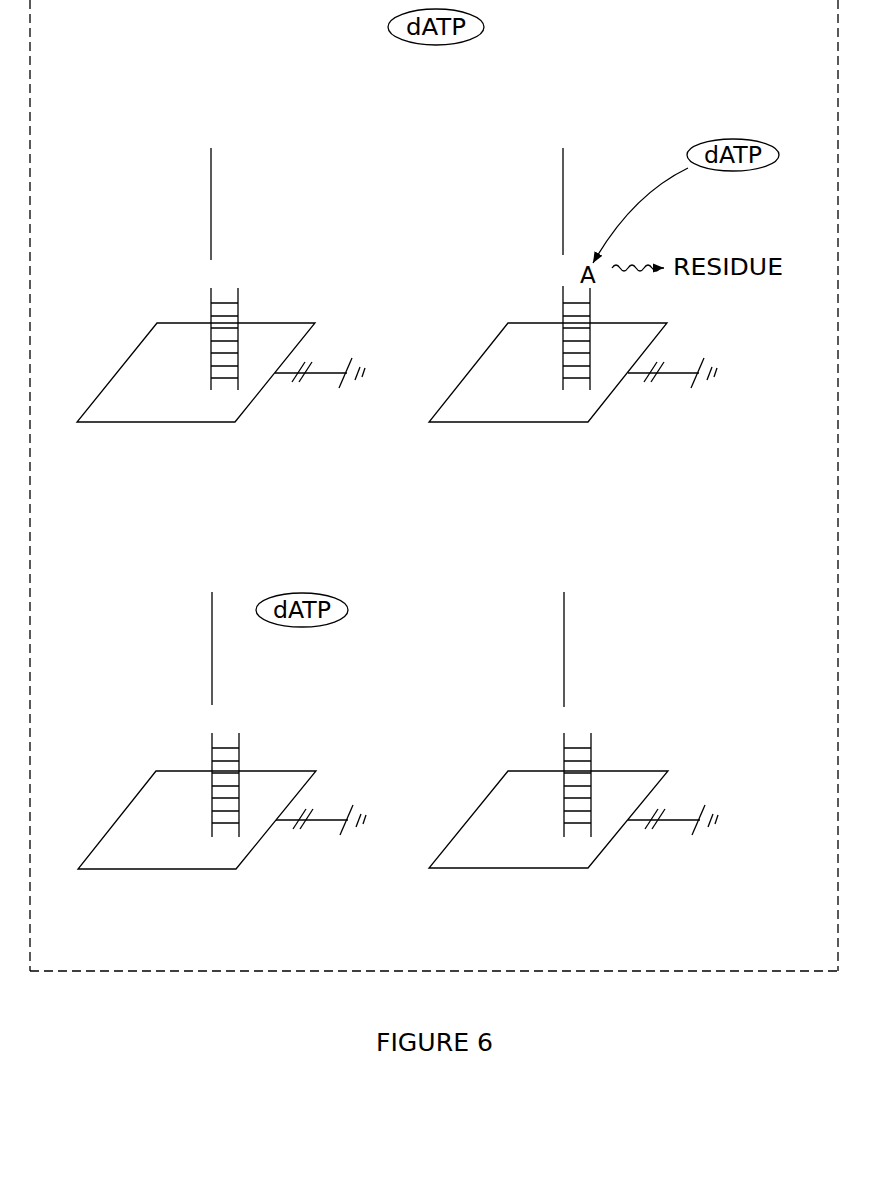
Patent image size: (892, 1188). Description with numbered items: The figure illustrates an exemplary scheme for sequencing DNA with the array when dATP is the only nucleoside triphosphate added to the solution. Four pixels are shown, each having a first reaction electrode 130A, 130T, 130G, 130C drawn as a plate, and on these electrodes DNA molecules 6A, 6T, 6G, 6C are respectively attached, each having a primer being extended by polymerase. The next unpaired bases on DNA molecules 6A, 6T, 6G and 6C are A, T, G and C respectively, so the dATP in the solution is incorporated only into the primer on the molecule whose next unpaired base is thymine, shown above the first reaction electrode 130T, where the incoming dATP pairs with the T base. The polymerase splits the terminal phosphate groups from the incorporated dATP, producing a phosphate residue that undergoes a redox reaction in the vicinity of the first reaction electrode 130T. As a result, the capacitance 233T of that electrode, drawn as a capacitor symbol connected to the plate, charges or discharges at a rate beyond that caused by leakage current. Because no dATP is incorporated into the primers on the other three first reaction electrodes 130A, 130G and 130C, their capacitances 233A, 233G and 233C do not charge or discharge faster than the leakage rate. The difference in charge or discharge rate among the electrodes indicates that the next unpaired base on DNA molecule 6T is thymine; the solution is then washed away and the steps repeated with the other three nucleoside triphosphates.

The DNA molecule 6A is at (207, 185).
The DNA molecule 6T is at (539, 240).
The DNA molecule 6G is at (188, 699).
The DNA molecule 6C is at (540, 703).
The first reaction electrode 130A is at (157, 402).
The first reaction electrode 130T is at (548, 398).
The first reaction electrode 130G is at (197, 845).
The first reaction electrode 130C is at (548, 845).
The capacitance 233A is at (313, 363).
The capacitance 233T is at (708, 338).
The capacitance 233G is at (334, 758).
The capacitance 233C is at (686, 758).